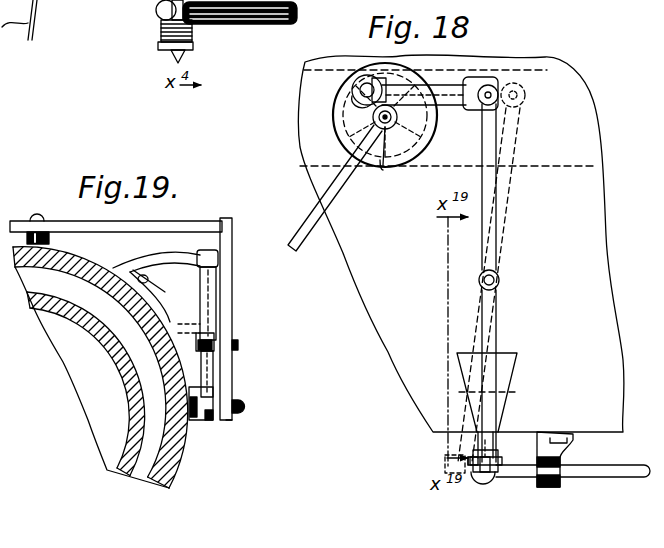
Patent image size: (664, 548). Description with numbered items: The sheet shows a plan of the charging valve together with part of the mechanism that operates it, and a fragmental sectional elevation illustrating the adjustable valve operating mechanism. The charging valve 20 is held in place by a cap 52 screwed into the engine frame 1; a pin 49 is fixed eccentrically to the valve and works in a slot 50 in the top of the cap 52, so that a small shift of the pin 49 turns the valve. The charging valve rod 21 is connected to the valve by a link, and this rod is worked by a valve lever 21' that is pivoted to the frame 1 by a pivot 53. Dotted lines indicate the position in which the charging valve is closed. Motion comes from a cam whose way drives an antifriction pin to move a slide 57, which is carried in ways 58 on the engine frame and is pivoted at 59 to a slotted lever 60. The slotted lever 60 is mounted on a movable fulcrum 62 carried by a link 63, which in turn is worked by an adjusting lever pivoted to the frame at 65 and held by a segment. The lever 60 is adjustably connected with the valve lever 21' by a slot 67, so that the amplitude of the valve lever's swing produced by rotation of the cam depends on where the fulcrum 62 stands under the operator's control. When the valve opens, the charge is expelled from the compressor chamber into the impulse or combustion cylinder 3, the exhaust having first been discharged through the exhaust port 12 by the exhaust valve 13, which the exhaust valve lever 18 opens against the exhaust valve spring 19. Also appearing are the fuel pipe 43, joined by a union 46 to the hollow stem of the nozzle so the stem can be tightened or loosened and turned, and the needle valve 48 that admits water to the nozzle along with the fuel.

In FIG. 18, the frame 1 is at (461, 243).
In FIG. 18, the impulse or combustion cylinder 3 is at (77, 13).
In FIG. 19, the impulse or combustion cylinder 3 is at (100, 412).
In FIG. 18, the exhaust port 12 is at (243, 22).
In FIG. 18, the exhaust valve 13 is at (157, 23).
In FIG. 18, the exhaust valve lever 18 is at (170, 58).
In FIG. 18, the exhaust valve spring 19 is at (192, 46).
In FIG. 18, the charging valve 20 is at (346, 117).
In FIG. 18, the charging valve rod 21 is at (453, 117).
In FIG. 18, the valve lever 21' is at (505, 283).
In FIG. 19, the valve lever 21' is at (116, 210).
In FIG. 18, the pipe 43 is at (330, 228).
In FIG. 18, the union 46 is at (380, 173).
In FIG. 18, the needle valve 48 is at (398, 117).
In FIG. 18, the pin 49 is at (353, 88).
In FIG. 18, the slot 50 is at (346, 101).
In FIG. 18, the cap 52 is at (336, 128).
In FIG. 18, the pivot 53 is at (498, 281).
In FIG. 19, the pivot 53 is at (30, 220).
In FIG. 18, the slide 57 is at (567, 478).
In FIG. 19, the slide 57 is at (230, 421).
In FIG. 18, the ways 58 is at (551, 457).
In FIG. 19, the pivot 59 is at (240, 407).
In FIG. 19, the slotted lever 60 is at (225, 306).
In FIG. 18, the movable fulcrum 62 is at (462, 457).
In FIG. 19, the movable fulcrum 62 is at (239, 345).
In FIG. 19, the link 63 is at (214, 368).
In FIG. 19, the pivot 65 is at (194, 313).
In FIG. 18, the slot 67 is at (500, 455).
In FIG. 19, the slot 67 is at (234, 221).